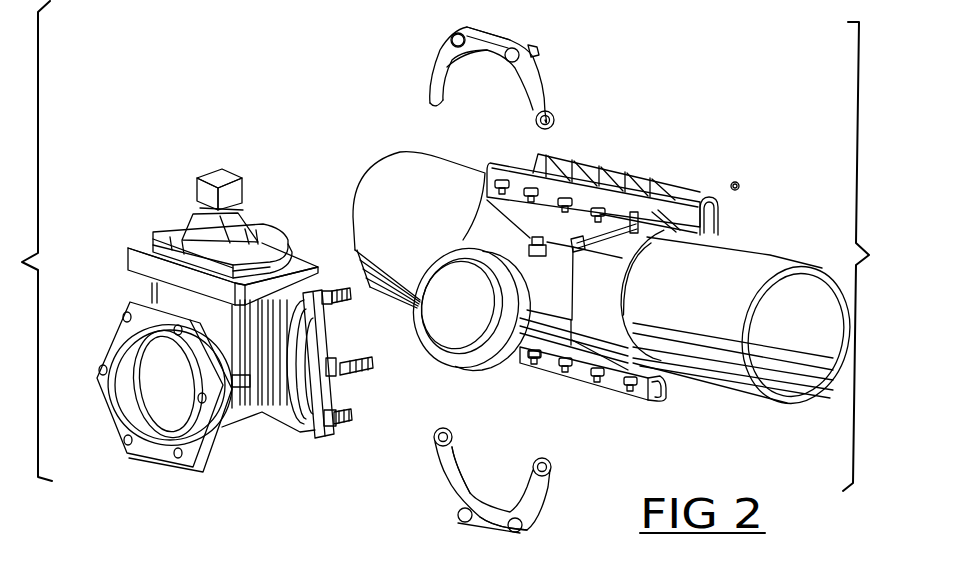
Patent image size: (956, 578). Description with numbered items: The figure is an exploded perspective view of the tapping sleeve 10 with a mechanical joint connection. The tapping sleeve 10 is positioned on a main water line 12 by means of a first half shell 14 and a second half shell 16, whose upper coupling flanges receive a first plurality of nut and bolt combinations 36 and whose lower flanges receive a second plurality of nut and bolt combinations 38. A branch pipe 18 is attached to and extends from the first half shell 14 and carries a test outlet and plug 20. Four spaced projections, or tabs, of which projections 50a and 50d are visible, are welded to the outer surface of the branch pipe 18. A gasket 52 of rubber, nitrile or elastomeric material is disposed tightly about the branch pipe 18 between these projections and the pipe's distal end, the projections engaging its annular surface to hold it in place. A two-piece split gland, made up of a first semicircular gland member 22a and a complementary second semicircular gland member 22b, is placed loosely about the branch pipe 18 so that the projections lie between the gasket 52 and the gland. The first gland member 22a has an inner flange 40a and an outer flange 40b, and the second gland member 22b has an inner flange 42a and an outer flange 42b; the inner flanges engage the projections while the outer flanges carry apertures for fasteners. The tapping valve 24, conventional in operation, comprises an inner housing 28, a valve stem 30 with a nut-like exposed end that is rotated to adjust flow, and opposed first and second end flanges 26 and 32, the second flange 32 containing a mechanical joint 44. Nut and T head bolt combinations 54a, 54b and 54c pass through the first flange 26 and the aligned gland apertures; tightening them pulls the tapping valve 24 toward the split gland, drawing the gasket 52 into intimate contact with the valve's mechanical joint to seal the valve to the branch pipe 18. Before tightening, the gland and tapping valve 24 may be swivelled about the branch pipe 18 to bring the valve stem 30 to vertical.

The tapping sleeve 10 is at (258, 118).
The main water line 12 is at (712, 310).
The first half shell 14 is at (616, 287).
The second half shell 16 is at (672, 190).
The branch pipe 18 is at (558, 290).
The test outlet and plug 20 is at (495, 193).
The first semicircular gland member 22a is at (560, 78).
The second semicircular gland member 22b is at (442, 475).
The tapping valve 24 is at (135, 218).
The first flange 26 is at (285, 423).
The inner housing 28 is at (168, 293).
The valve stem 30 is at (208, 188).
The second flange 32 is at (157, 457).
The first plurality of nut and bolt combinations 36 is at (598, 168).
The second plurality of nut and bolt combinations 38 is at (623, 395).
The inner flange 40a is at (472, 55).
The outer flange 40b is at (447, 54).
The inner flange 42a is at (460, 475).
The outer flange 42b is at (493, 525).
The mechanical joint 44 is at (123, 407).
The spaced projection 50a is at (470, 238).
The spaced projection 50d is at (536, 361).
The gasket 52 is at (497, 360).
The nut and T head bolt combination 54a is at (343, 423).
The nut and T head bolt combination 54b is at (375, 368).
The nut and T head bolt combination 54c is at (350, 298).